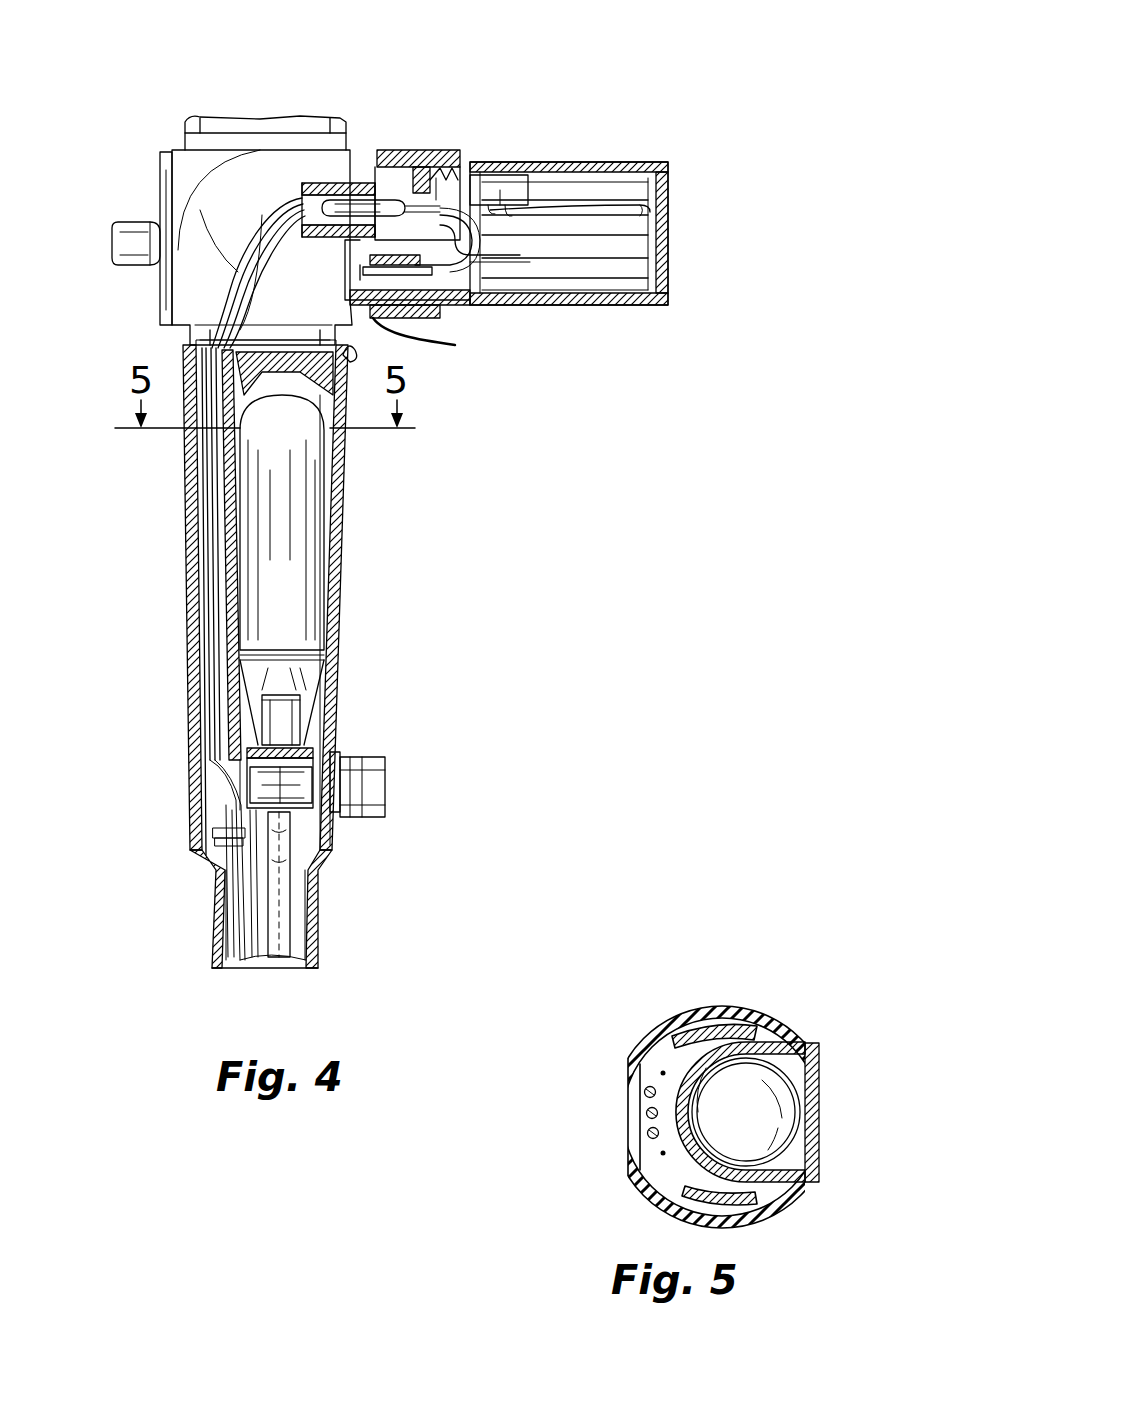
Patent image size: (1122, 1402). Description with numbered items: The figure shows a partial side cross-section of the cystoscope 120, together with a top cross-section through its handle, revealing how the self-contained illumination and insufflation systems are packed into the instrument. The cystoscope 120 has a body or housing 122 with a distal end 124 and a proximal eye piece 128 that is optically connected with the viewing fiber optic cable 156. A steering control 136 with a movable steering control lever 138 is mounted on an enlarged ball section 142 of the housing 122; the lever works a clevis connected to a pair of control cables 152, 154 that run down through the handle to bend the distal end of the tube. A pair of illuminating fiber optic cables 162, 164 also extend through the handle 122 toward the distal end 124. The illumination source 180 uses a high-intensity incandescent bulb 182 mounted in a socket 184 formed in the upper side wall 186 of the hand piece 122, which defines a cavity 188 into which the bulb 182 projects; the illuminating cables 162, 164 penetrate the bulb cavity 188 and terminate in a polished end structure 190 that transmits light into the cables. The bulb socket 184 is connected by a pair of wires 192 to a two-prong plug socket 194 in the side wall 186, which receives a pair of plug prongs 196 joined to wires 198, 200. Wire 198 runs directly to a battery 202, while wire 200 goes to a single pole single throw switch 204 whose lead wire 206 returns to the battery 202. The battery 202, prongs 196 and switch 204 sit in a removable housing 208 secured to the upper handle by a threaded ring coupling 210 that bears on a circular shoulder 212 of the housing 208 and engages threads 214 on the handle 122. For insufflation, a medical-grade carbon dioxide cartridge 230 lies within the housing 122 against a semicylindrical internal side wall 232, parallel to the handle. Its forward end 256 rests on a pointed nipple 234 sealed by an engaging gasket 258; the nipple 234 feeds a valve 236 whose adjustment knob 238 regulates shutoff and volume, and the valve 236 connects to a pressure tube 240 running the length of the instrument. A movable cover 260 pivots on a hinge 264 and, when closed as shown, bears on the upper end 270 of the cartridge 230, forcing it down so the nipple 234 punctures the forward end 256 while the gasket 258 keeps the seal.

In FIG. 4, the cystoscope 120 is at (352, 545).
In FIG. 4, the housing 122 is at (232, 640).
In FIG. 5, the housing 122 is at (793, 1220).
In FIG. 4, the distal end 124 is at (318, 950).
In FIG. 4, the eye piece 128 is at (348, 110).
In FIG. 4, the steering control 136 is at (158, 274).
In FIG. 4, the steering control lever 138 is at (118, 245).
In FIG. 4, the enlarged ball section 142 is at (190, 185).
In FIG. 4, the control cable 152 is at (230, 795).
In FIG. 5, the control cable 152 is at (661, 1073).
In FIG. 5, the control cable 154 is at (662, 1156).
In FIG. 4, the viewing fiber optic cable 156 is at (236, 940).
In FIG. 5, the viewing fiber optic cable 156 is at (647, 1115).
In FIG. 4, the illuminating fiber optic cable 162 is at (246, 958).
In FIG. 5, the illuminating fiber optic cable 162 is at (645, 1094).
In FIG. 4, the illuminating fiber optic cable 164 is at (282, 930).
In FIG. 5, the illuminating fiber optic cable 164 is at (649, 1137).
In FIG. 4, the illumination source 180 is at (425, 150).
In FIG. 4, the module housing 182 is at (398, 135).
In FIG. 4, the socket 184 is at (440, 185).
In FIG. 4, the upper side wall 186 is at (405, 322).
In FIG. 4, the cavity 188 is at (325, 182).
In FIG. 4, the polished end structure 190 is at (311, 198).
In FIG. 4, the wires 192 is at (455, 165).
In FIG. 4, the plug socket 194 is at (440, 312).
In FIG. 4, the plug prongs 196 is at (470, 306).
In FIG. 4, the wire 198 is at (530, 262).
In FIG. 4, the wire 200 is at (470, 260).
In FIG. 4, the battery 202 is at (638, 280).
In FIG. 4, the switch 204 is at (505, 175).
In FIG. 4, the lead wire 206 is at (638, 204).
In FIG. 4, the removable housing 208 is at (657, 262).
In FIG. 4, the threaded ring coupling 210 is at (420, 320).
In FIG. 4, the circular shoulder 212 is at (434, 316).
In FIG. 4, the threads 214 is at (428, 318).
In FIG. 4, the CO2 cartridge 230 is at (318, 513).
In FIG. 5, the CO2 cartridge 230 is at (790, 1098).
In FIG. 4, the internal side wall 232 is at (188, 707).
In FIG. 5, the internal side wall 232 is at (704, 1066).
In FIG. 4, the nipple 234 is at (295, 740).
In FIG. 4, the valve 236 is at (348, 822).
In FIG. 4, the adjustment knob 238 is at (372, 810).
In FIG. 4, the pressure tube 240 is at (315, 898).
In FIG. 4, the forward end 256 is at (286, 725).
In FIG. 4, the engaging gasket 258 is at (255, 758).
In FIG. 4, the movable cover 260 is at (338, 616).
In FIG. 5, the movable cover 260 is at (818, 1114).
In FIG. 4, the hinge 264 is at (356, 352).
In FIG. 4, the upper end 270 is at (282, 403).